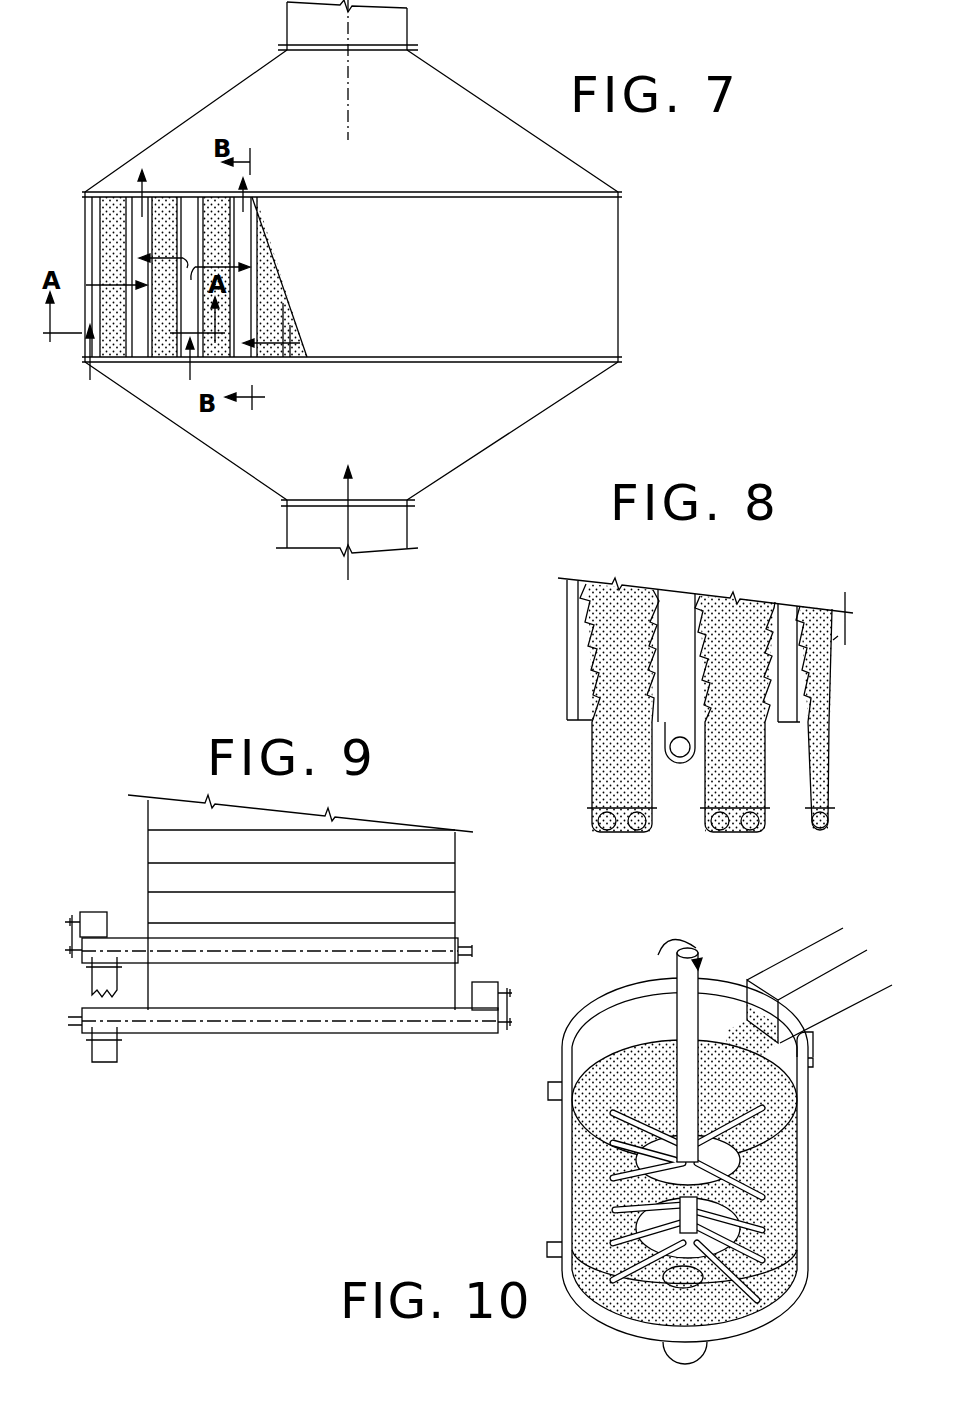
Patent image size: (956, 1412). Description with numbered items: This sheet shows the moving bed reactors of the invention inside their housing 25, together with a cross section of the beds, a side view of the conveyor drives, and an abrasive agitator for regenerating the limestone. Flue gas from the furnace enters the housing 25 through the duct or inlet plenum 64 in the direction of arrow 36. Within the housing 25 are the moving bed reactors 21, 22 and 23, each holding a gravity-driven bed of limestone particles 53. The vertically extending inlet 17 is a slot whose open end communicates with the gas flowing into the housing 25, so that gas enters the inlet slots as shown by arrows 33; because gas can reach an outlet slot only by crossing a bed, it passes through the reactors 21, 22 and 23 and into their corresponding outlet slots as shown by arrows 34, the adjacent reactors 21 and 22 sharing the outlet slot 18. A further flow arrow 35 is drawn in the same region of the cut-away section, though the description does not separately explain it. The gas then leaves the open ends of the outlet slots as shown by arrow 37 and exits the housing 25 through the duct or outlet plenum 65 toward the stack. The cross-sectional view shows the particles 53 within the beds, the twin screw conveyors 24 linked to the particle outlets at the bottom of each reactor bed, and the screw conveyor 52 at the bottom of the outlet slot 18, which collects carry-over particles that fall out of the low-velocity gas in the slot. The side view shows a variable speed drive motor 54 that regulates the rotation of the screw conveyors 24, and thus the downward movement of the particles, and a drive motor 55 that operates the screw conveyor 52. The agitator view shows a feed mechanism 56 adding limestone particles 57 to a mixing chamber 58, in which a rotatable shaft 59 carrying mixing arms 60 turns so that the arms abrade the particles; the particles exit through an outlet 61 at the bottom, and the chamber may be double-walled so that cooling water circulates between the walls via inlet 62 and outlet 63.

In FIG. 7, the inlet 17 is at (88, 254).
In FIG. 7, the outlet slot 18 is at (142, 347).
In FIG. 8, the outlet slot 18 is at (673, 647).
In FIG. 7, the moving bed reactor 21 is at (107, 203).
In FIG. 7, the moving bed reactor 22 is at (165, 210).
In FIG. 7, the moving bed reactor 23 is at (218, 208).
In FIG. 8, the twin screw conveyors 24 is at (598, 826).
In FIG. 9, the twin screw conveyors 24 is at (300, 1033).
In FIG. 7, the housing 25 is at (618, 295).
In FIG. 7, the arrows 33 is at (90, 382).
In FIG. 7, the arrows 34 is at (160, 258).
In FIG. 7, the gas outlet passage 35 is at (246, 355).
In FIG. 7, the arrow 36 is at (350, 527).
In FIG. 7, the arrow 37 is at (137, 196).
In FIG. 8, the screw conveyor 52 is at (680, 760).
In FIG. 9, the screw conveyor 52 is at (435, 946).
In FIG. 7, the particles 53 is at (107, 232).
In FIG. 8, the particles 53 is at (610, 752).
In FIG. 9, the variable speed drive motor 54 is at (485, 985).
In FIG. 9, the drive motor 55 is at (93, 912).
In FIG. 10, the feed mechanism 56 is at (850, 1005).
In FIG. 10, the limestone particles 57 is at (810, 1048).
In FIG. 10, the mixing chamber 58 is at (810, 1172).
In FIG. 10, the rotatable shaft 59 is at (703, 965).
In FIG. 10, the mixing arms 60 is at (775, 1278).
In FIG. 10, the outlet 61 is at (712, 1345).
In FIG. 10, the inlet 62 is at (547, 1240).
In FIG. 10, the outlet 63 is at (548, 1085).
In FIG. 7, the inlet plenum 64 is at (410, 528).
In FIG. 7, the outlet plenum 65 is at (410, 32).